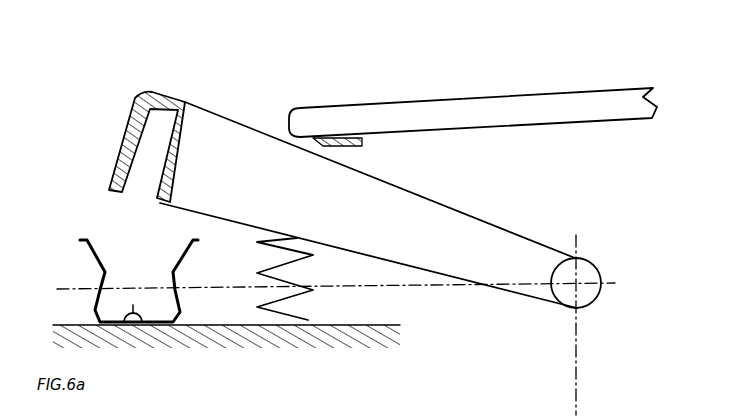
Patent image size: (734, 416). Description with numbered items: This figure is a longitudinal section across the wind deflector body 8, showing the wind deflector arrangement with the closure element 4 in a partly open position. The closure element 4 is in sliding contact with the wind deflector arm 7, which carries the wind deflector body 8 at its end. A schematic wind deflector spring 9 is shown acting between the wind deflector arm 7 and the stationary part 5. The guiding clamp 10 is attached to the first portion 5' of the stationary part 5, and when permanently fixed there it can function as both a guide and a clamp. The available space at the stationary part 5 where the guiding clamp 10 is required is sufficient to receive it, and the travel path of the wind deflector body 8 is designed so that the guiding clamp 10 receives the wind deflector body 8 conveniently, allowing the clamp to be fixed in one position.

The closure element 4 is at (528, 88).
The stationary part 5 is at (226, 368).
The first portion 5' is at (226, 364).
The wind deflector arm 7 is at (232, 127).
The wind deflector body 8 is at (123, 140).
The wind deflector spring 9 is at (297, 297).
The guiding clamp 10 is at (97, 240).